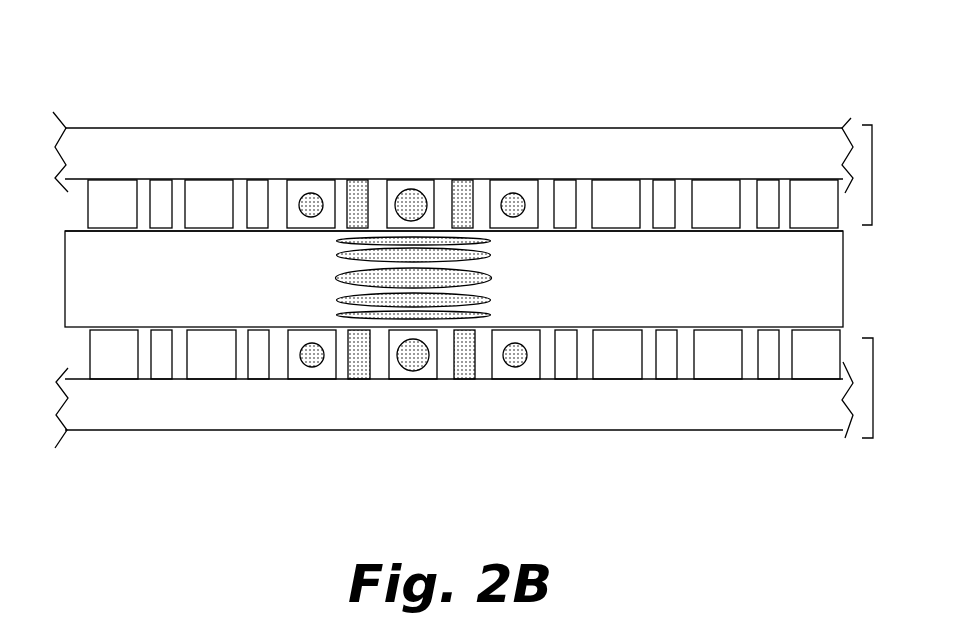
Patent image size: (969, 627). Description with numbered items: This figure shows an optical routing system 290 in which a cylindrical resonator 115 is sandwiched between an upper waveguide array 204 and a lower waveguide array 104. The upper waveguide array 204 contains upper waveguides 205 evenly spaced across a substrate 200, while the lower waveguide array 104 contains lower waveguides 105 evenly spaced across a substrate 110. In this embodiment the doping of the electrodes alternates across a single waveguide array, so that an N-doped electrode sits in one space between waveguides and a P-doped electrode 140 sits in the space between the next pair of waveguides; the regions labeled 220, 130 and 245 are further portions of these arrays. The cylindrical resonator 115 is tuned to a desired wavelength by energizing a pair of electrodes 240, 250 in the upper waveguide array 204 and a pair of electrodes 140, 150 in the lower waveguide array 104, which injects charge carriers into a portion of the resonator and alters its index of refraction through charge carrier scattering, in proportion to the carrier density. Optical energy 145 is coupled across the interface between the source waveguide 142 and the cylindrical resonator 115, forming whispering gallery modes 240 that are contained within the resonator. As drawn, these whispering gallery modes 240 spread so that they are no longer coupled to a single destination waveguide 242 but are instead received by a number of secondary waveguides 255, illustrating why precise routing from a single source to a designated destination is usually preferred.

The optical routing system 290 is at (85, 72).
The substrate 200 is at (148, 162).
The upper waveguide array 204 is at (872, 138).
The upper waveguides 205 is at (88, 204).
The N-type region 220 is at (257, 182).
The electrode / whispering gallery modes 240 is at (363, 182).
The destination waveguide 242 is at (390, 180).
The conductive via 245 is at (417, 190).
The electrode 250 is at (462, 190).
The secondary waveguides 255 is at (523, 187).
The cylindrical resonator 115 is at (148, 290).
The lower waveguides 105 is at (90, 354).
The substrate 110 is at (148, 420).
The lower waveguide array 104 is at (873, 425).
The P-type region 130 is at (265, 372).
The P-doped electrode 140 is at (362, 378).
The source waveguide 142 is at (392, 378).
The optical energy 145 is at (417, 370).
The electrode 150 is at (462, 370).